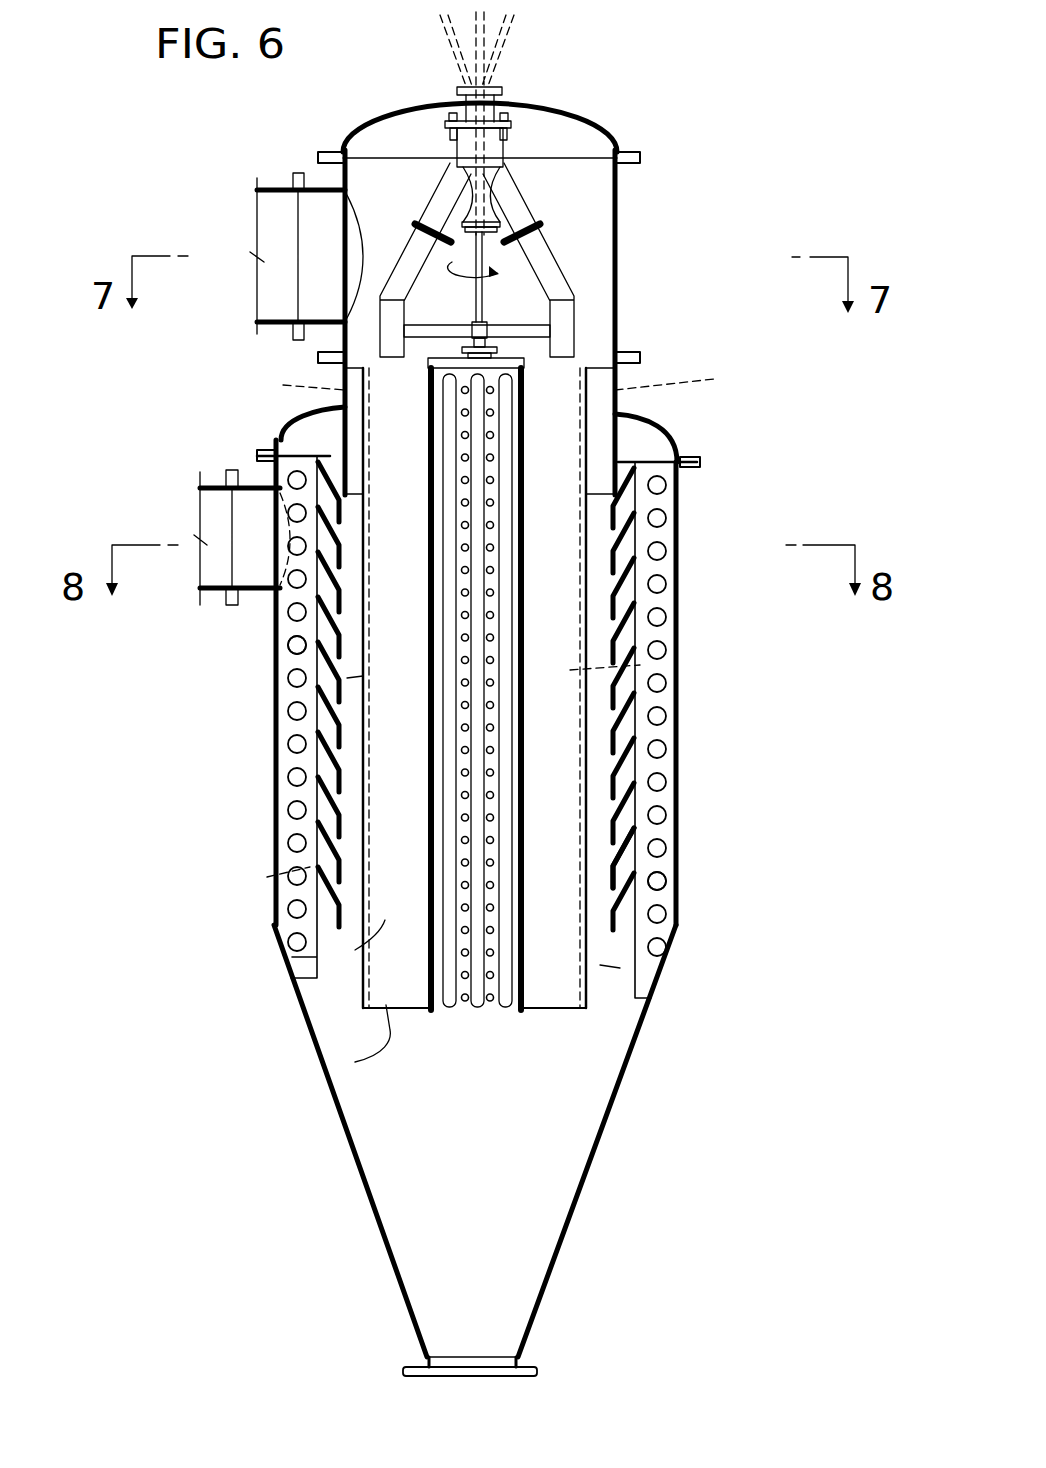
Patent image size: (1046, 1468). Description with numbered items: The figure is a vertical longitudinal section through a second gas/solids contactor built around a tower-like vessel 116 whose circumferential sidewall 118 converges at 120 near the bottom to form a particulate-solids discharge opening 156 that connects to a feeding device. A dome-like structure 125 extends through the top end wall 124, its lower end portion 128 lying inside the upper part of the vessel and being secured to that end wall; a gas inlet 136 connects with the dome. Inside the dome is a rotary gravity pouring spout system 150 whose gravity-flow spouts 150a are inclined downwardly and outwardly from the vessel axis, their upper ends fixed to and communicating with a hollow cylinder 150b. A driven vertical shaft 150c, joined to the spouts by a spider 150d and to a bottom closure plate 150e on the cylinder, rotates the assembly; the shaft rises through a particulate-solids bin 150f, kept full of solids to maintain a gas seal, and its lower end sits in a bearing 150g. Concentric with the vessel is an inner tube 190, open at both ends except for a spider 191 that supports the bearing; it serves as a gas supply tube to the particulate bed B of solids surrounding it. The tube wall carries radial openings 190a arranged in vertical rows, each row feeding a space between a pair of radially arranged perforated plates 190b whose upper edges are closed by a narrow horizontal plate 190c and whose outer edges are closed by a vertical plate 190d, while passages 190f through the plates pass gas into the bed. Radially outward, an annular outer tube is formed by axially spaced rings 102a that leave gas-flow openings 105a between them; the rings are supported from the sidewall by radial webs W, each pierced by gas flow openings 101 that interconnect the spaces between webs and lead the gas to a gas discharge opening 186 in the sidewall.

The gas flow openings 101 is at (292, 842).
The rings 102a is at (322, 818).
The gas-flow openings 105a is at (623, 827).
The tower-like vessel 116 is at (690, 511).
The circumferential sidewall 118 is at (680, 803).
The converging portion of sidewall 120 is at (610, 1150).
The top end wall 124 is at (256, 455).
The dome-like structure 125 is at (636, 265).
The lower end portion of dome 128 is at (640, 418).
The gas inlet 136 is at (313, 183).
The rotary gravity pouring spout system 150 is at (558, 219).
The gravity-flow spouts 150a is at (566, 232).
The hollow cylinder 150b is at (497, 177).
The driven vertical shaft 150c is at (578, 287).
The spider 150d is at (440, 327).
The bottom closure plate 150e is at (510, 218).
The particulate-solids bin 150f is at (507, 48).
The bearing 150g is at (576, 345).
The particulate-solids discharge opening 156 is at (432, 1376).
The gas discharge opening 186 is at (255, 598).
The inner tube 190 is at (580, 443).
The radial openings 190a is at (548, 768).
The perforated plates 190b is at (355, 1062).
The narrow horizontal plate 190c is at (501, 379).
The vertical plate 190d is at (267, 877).
The passages 190f is at (375, 980).
The spider 191 is at (340, 340).
The particulate bed B is at (590, 1062).
The webs W is at (660, 867).